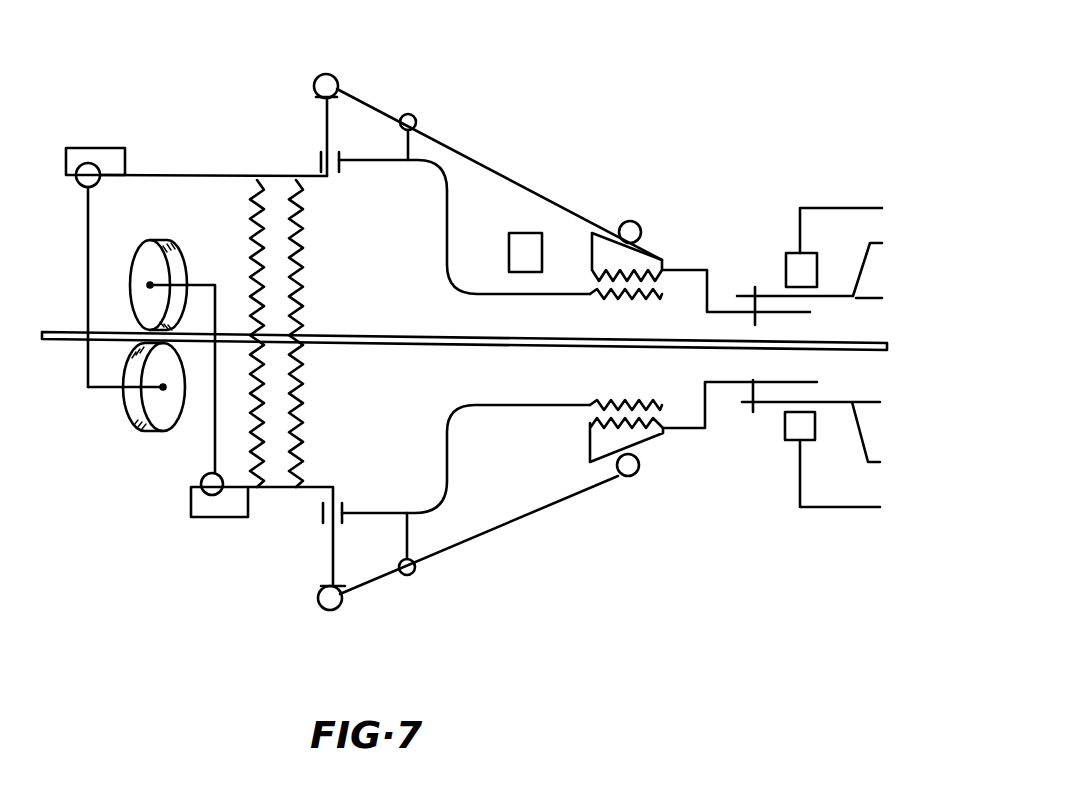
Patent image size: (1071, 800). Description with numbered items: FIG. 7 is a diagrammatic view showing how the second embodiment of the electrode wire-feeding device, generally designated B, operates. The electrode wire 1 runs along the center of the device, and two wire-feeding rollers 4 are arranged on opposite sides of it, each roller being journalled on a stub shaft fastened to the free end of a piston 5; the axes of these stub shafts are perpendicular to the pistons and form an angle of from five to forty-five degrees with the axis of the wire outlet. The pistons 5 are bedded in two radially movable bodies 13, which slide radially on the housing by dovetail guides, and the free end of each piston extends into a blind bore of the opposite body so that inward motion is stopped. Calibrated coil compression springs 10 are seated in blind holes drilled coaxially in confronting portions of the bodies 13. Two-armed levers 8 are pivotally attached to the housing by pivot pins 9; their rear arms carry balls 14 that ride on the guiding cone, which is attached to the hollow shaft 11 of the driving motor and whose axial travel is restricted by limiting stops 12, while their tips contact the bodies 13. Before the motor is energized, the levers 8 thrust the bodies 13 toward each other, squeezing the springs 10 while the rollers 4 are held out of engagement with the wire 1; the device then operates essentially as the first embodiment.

The electrode wire 1 is at (50, 336).
The wire-feeding rollers 4 is at (155, 268).
The pistons 5 is at (88, 270).
The calibrated coil compression springs 10 is at (296, 254).
The limiting stops 12 is at (510, 246).
The balls 14 is at (640, 228).
The radially movable bodies 13 is at (330, 541).
The pivot pins 9 is at (407, 576).
The two-armed levers 8 is at (480, 535).
The hollow shaft 11 is at (735, 390).
The electrode wire-feeding device (second embodiment) B is at (532, 149).